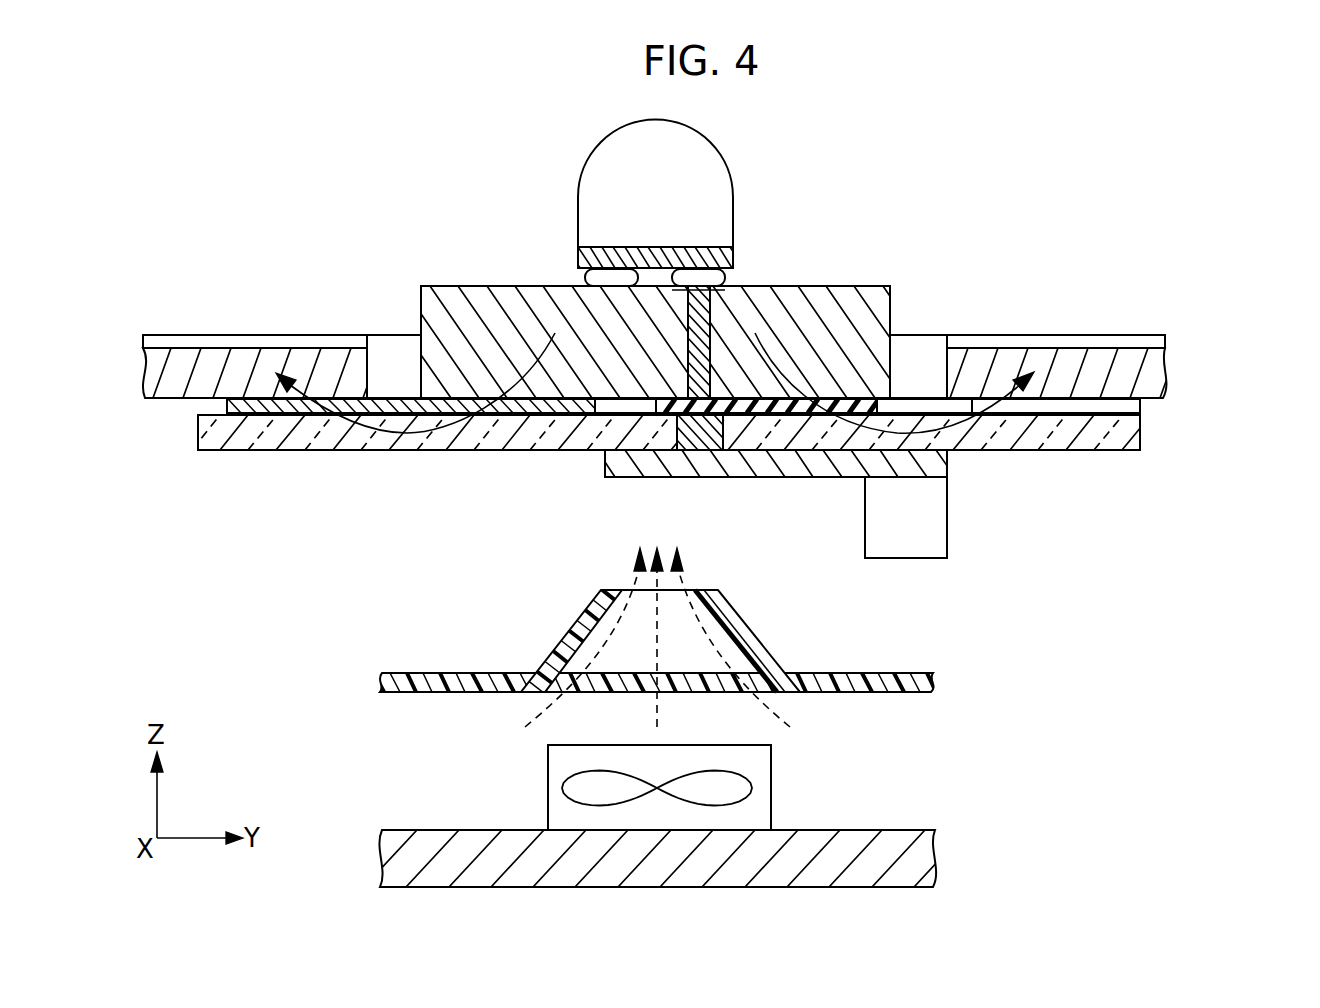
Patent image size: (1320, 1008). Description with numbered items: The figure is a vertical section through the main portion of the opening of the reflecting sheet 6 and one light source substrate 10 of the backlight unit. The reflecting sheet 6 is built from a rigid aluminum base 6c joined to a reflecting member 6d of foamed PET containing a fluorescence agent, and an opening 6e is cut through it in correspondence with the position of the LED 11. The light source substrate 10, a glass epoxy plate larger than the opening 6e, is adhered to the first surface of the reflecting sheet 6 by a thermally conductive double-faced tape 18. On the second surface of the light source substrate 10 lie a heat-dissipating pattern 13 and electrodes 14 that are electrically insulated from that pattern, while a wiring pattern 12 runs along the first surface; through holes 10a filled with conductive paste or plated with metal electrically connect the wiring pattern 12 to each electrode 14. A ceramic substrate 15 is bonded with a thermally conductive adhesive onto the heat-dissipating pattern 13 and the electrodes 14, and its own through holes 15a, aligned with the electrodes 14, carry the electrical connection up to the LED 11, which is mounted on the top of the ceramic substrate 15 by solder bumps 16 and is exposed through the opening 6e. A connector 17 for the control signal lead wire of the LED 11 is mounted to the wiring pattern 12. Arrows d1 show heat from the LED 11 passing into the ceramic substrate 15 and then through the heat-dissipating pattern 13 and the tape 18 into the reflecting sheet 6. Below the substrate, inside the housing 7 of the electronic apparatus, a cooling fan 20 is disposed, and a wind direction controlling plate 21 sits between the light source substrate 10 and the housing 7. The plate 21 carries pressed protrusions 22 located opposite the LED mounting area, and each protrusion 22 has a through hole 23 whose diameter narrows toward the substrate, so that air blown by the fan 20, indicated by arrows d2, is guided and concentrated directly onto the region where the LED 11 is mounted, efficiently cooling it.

The LED 11 is at (597, 181).
The solder bumps 16 is at (598, 276).
The through holes 15a is at (698, 292).
The ceramic substrate 15 is at (848, 290).
The electrodes 14 is at (862, 398).
The reflecting sheet 6 is at (697, 358).
The reflecting member 6d is at (1150, 339).
The base 6c is at (1160, 366).
The opening 6e is at (947, 368).
The thermally conductive double-faced tape 18 is at (1130, 409).
The heat-dissipating pattern 13 is at (272, 405).
The light source substrate 10 is at (468, 443).
The through holes 10a is at (687, 440).
The wiring pattern 12 is at (798, 462).
The connector 17 is at (935, 540).
The arrows d1 is at (383, 418).
The wind direction controlling plate 21 is at (890, 673).
The protrusions 22 is at (742, 628).
The through holes 23 is at (758, 680).
The arrows d2 is at (657, 665).
The cooling fan 20 is at (765, 783).
The housing 7 is at (928, 856).